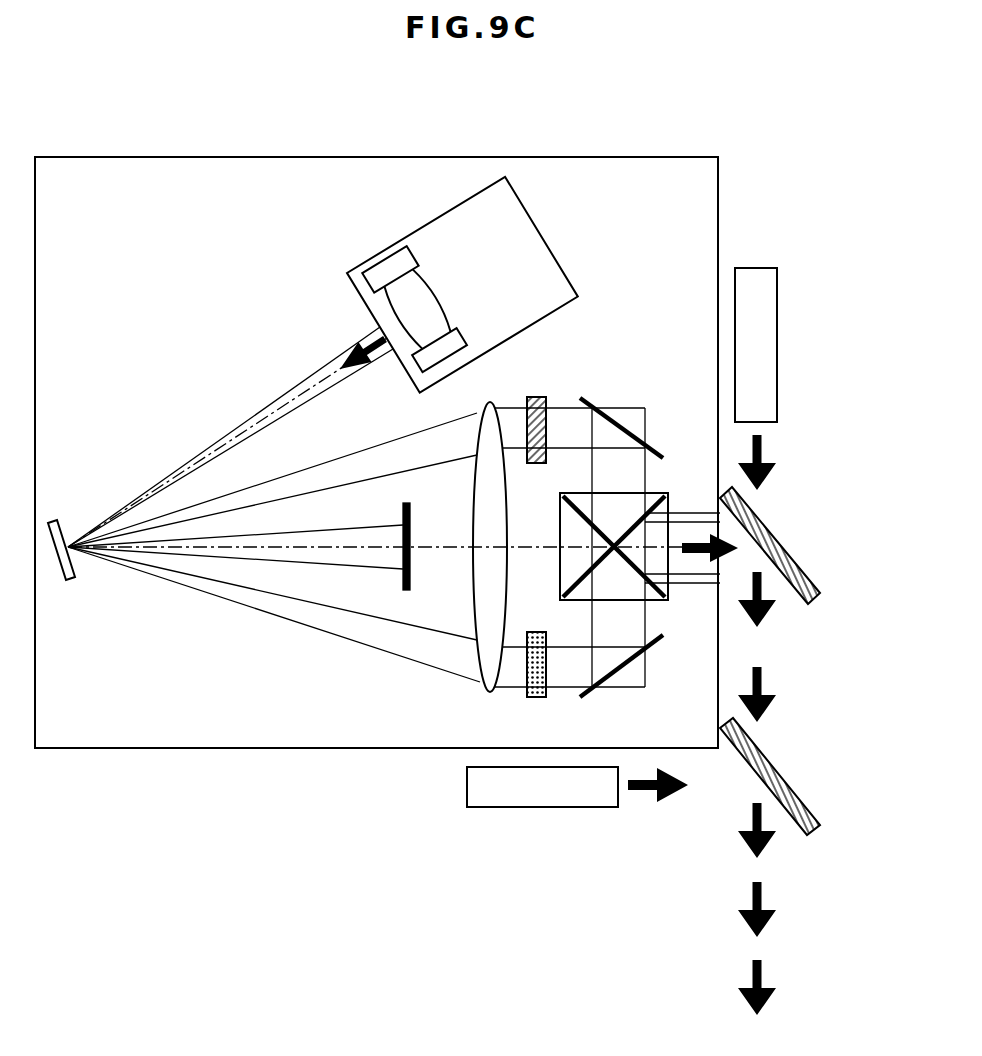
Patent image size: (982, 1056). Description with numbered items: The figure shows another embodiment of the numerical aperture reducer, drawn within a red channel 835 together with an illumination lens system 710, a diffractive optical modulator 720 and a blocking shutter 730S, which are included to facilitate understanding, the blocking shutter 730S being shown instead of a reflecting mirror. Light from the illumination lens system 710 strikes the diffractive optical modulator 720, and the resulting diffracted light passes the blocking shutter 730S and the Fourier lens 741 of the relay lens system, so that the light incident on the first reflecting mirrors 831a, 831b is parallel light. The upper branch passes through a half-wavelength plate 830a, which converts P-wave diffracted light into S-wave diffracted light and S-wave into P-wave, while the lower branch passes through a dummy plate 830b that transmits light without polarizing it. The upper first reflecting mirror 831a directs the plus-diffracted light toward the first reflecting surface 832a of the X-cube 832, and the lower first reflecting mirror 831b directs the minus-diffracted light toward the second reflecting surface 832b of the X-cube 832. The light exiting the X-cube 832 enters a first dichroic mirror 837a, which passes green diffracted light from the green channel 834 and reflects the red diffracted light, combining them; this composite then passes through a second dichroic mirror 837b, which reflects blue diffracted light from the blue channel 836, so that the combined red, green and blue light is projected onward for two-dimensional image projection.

The illumination lens system 710 is at (537, 228).
The diffractive optical modulator 720 is at (60, 527).
The blocking shutter 730S is at (405, 593).
The Fourier lens 741 is at (487, 695).
The half-wavelength plate 830a is at (534, 397).
The dummy plate 830b is at (537, 698).
The upper first reflecting mirror 831a is at (612, 420).
The lower first reflecting mirror 831b is at (620, 672).
The X-cube 832 is at (668, 505).
The first reflecting surface 832a is at (668, 595).
The second reflecting surface 832b is at (583, 587).
The green channel 834 is at (758, 268).
The red channel 835 is at (452, 156).
The blue channel 836 is at (550, 807).
The first dichroic mirror 837a is at (787, 558).
The second dichroic mirror 837b is at (777, 773).